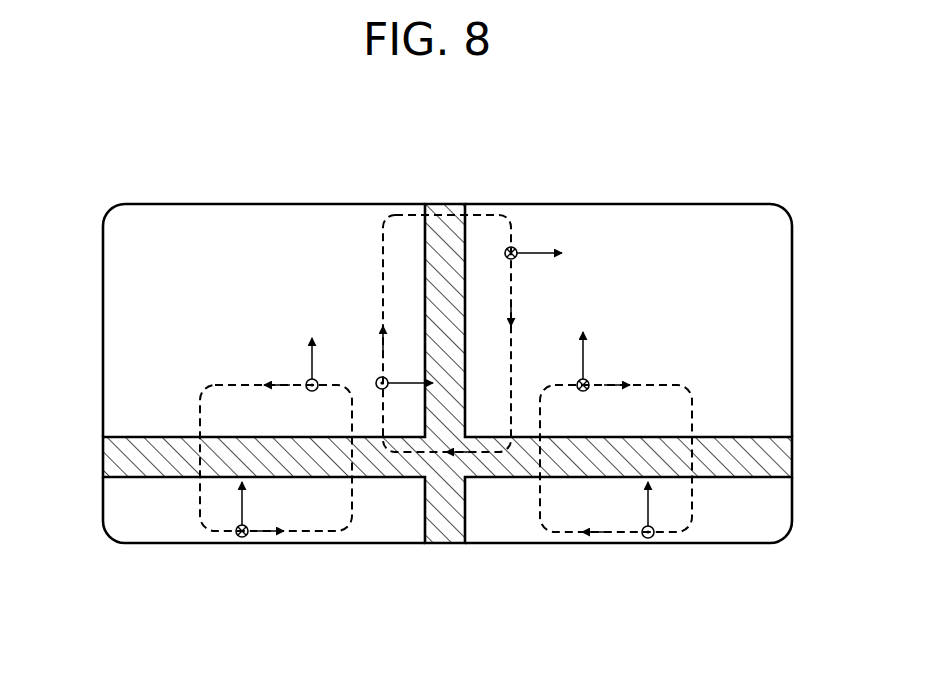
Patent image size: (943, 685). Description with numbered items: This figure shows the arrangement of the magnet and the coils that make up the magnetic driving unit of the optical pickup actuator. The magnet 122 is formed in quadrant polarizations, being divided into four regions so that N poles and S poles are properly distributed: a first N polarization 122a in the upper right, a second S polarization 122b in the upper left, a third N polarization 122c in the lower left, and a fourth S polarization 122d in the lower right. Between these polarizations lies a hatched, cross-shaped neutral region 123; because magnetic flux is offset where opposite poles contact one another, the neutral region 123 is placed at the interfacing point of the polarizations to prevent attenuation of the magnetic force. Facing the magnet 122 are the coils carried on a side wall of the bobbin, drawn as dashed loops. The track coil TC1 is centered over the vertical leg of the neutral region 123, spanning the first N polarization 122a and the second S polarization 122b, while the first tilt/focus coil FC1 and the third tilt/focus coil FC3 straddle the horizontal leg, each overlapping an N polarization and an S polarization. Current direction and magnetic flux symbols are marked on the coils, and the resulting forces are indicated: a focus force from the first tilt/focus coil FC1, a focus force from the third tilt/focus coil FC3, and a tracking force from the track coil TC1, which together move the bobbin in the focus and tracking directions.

The magnet 122 is at (550, 194).
The first N polarization 122a is at (680, 218).
The second S polarization 122b is at (214, 218).
The third N polarization 122c is at (132, 543).
The fourth S polarization 122d is at (752, 533).
The neutral region 123 is at (443, 528).
The track coil TC1 is at (385, 215).
The first tilt/focus coil FC1 is at (217, 543).
The third tilt/focus coil FC3 is at (555, 533).